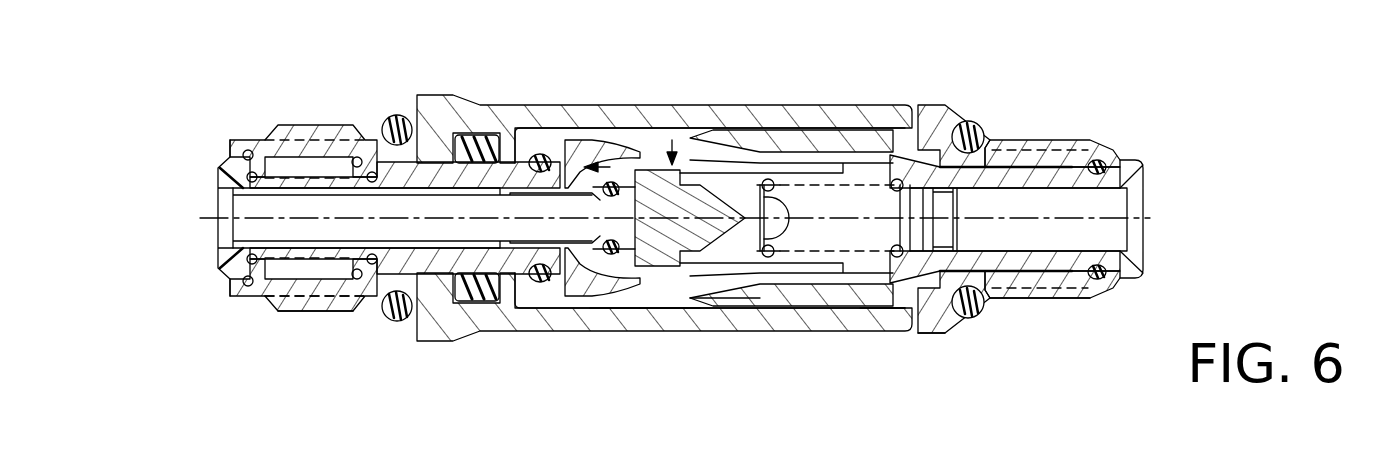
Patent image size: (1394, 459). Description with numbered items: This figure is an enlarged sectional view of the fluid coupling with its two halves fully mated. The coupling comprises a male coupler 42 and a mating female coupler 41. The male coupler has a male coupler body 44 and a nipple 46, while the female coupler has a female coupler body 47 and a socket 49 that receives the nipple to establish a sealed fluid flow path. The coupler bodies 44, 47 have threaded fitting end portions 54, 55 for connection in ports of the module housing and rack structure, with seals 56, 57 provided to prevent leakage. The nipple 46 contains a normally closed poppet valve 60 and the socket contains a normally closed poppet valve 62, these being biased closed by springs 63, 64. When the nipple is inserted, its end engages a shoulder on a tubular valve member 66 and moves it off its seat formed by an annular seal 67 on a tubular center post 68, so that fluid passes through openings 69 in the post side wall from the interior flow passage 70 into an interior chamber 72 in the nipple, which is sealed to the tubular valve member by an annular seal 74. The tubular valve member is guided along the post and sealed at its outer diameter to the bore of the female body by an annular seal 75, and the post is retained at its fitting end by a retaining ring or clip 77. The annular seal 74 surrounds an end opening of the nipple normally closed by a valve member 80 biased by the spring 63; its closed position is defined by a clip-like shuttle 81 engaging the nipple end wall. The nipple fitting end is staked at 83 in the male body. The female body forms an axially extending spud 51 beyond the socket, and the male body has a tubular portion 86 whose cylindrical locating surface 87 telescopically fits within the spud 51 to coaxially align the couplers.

The female coupler 41 is at (320, 323).
The male coupler 42 is at (1065, 313).
The male coupler body 44 is at (950, 117).
The nipple 46 is at (625, 128).
The female coupler body 47 is at (426, 95).
The socket 49 is at (650, 313).
The spud 51 is at (872, 103).
The fitting end portion 54 is at (1060, 128).
The fitting end portion 55 is at (300, 125).
The seal 56 is at (985, 292).
The seal 57 is at (401, 321).
The poppet valve 60 is at (703, 205).
The poppet valve 62 is at (660, 135).
The spring 63 is at (870, 317).
The spring 64 is at (267, 308).
The tubular valve member 66 is at (435, 160).
The annular seal 67 is at (607, 313).
The tubular center post 68 is at (338, 187).
The openings 69 is at (600, 258).
The interior flow passage 70 is at (267, 228).
The interior chamber 72 is at (700, 308).
The annular seal 74 is at (548, 154).
The annular seal 75 is at (476, 302).
The retaining ring or clip 77 is at (228, 142).
The valve member 80 is at (775, 180).
The clip-like shuttle 81 is at (757, 312).
The staked connection 83 is at (1142, 173).
The tubular portion 86 is at (943, 313).
The cylindrical locating surface 87 is at (833, 313).